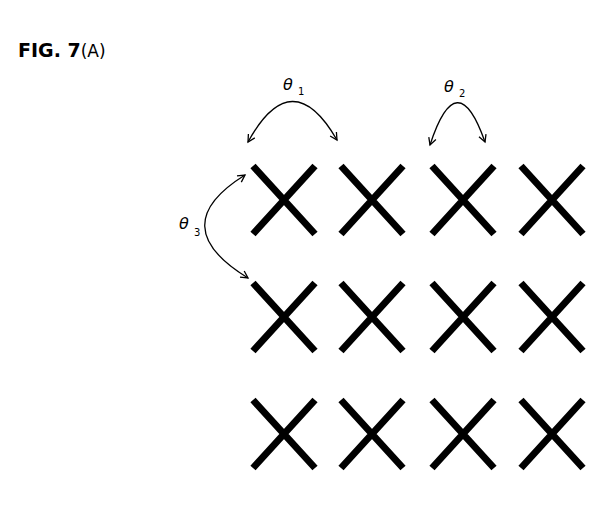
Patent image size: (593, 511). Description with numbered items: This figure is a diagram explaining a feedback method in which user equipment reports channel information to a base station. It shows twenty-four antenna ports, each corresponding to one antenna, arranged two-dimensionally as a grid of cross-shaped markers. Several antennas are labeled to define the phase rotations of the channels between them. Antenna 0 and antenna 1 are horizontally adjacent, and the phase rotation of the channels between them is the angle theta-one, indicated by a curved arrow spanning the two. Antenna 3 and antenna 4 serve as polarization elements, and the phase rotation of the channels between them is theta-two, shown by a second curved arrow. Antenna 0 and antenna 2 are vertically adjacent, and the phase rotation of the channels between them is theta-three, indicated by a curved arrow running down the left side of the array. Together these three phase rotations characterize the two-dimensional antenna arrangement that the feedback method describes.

The antenna 0 is at (277, 190).
The antenna 1 is at (368, 190).
The antenna 2 is at (274, 317).
The antenna 3 is at (455, 192).
The antenna 4 is at (537, 192).